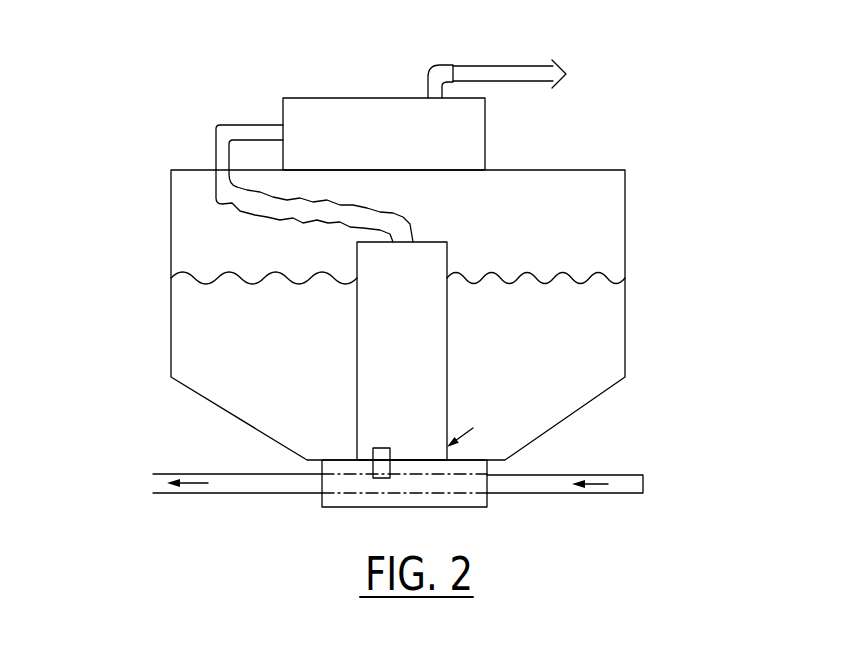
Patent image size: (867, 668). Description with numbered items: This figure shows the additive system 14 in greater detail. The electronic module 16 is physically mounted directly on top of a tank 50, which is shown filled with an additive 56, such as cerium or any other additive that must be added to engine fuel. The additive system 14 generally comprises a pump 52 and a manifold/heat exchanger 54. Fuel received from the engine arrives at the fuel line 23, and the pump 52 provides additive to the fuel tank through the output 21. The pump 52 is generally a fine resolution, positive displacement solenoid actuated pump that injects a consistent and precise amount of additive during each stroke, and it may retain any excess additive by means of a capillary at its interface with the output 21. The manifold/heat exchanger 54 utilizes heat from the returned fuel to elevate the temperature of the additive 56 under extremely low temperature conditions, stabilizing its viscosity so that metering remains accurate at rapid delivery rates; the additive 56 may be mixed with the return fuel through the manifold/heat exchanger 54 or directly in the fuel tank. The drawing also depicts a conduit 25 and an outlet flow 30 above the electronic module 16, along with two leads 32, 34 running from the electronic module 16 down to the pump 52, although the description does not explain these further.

The additive system 14 is at (152, 95).
The electronic module 16 is at (363, 97).
The output 21 is at (322, 492).
The fuel line 23 is at (487, 493).
The conduit 25 is at (498, 65).
The outlet flow 30 is at (517, 82).
The pump control lead 32 is at (279, 120).
The sensor lead 34 is at (283, 141).
The tank 50 is at (634, 216).
The pump 52 is at (447, 372).
The manifold/heat exchanger 54 is at (390, 508).
The additive 56 is at (587, 354).